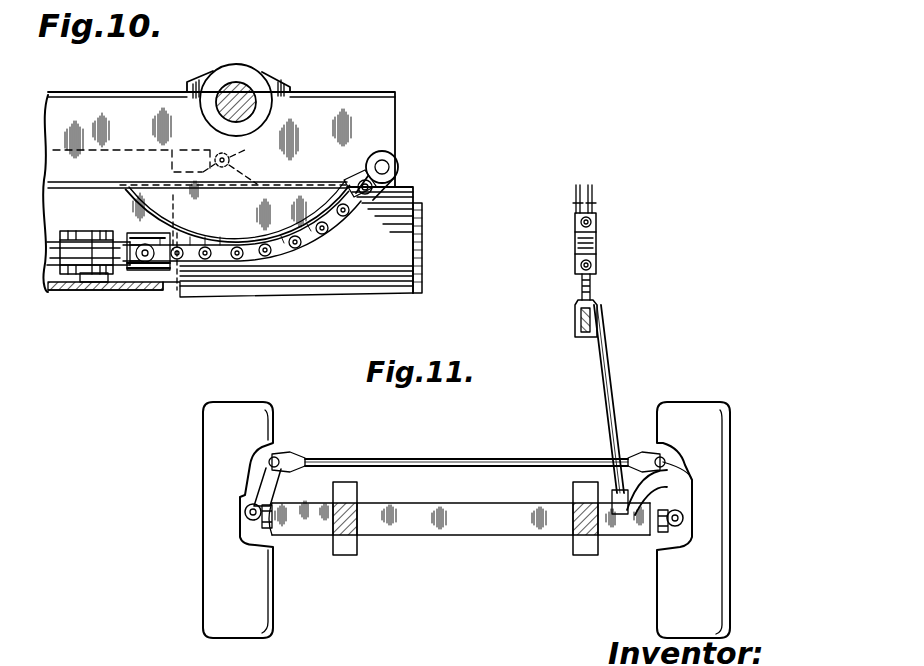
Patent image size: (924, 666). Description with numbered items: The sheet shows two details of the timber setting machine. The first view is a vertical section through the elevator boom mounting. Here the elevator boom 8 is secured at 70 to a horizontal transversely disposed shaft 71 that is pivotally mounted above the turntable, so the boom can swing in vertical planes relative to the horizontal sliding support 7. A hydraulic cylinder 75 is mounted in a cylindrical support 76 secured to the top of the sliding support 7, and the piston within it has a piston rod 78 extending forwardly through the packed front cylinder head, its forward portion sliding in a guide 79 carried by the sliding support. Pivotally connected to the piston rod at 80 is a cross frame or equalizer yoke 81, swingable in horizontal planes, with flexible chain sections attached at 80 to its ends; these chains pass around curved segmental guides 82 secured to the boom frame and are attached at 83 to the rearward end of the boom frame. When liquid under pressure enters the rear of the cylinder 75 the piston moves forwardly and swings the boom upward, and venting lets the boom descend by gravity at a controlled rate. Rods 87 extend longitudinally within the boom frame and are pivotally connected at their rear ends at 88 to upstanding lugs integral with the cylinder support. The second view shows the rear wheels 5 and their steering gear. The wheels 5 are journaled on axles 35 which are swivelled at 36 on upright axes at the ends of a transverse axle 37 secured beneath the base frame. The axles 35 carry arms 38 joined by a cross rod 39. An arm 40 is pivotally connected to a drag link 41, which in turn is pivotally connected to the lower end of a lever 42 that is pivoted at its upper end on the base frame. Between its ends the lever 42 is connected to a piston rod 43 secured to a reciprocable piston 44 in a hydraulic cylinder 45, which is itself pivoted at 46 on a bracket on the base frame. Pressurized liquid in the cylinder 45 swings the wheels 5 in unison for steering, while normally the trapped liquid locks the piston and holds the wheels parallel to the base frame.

In FIG. 11, the rubber tired wheels 5 is at (215, 418).
In FIG. 10, the horizontal sliding support 7 is at (58, 290).
In FIG. 10, the elevator boom 8 is at (67, 95).
In FIG. 11, the axles 35 is at (241, 512).
In FIG. 11, the swivel 36 is at (241, 526).
In FIG. 11, the transverse axle 37 is at (462, 528).
In FIG. 11, the arms 38 is at (270, 496).
In FIG. 11, the cross rod 39 is at (381, 459).
In FIG. 11, the arm 40 is at (672, 497).
In FIG. 11, the drag link 41 is at (604, 420).
In FIG. 11, the lever 42 is at (584, 333).
In FIG. 11, the piston rod 43 is at (594, 290).
In FIG. 11, the reciprocable piston 44 is at (598, 245).
In FIG. 11, the hydraulic cylinder 45 is at (580, 232).
In FIG. 11, the pivotal mounting of cylinder 46 is at (597, 204).
In FIG. 10, the securing point of boom to shaft 70 is at (238, 95).
In FIG. 10, the horizontal transversely disposed shaft 71 is at (248, 96).
In FIG. 10, the hydraulic cylinder 75 is at (420, 222).
In FIG. 10, the cylindrical support 76 is at (400, 201).
In FIG. 10, the piston rod 78 is at (157, 273).
In FIG. 10, the guide 79 is at (332, 224).
In FIG. 10, the pivotal connection 80 is at (100, 283).
In FIG. 10, the equalizer yoke 81 is at (72, 232).
In FIG. 10, the curved segmental guides 82 is at (279, 233).
In FIG. 10, the chain attachment point 83 is at (388, 164).
In FIG. 10, the rods 87 is at (105, 152).
In FIG. 10, the pivotal connection of rods 88 is at (236, 159).